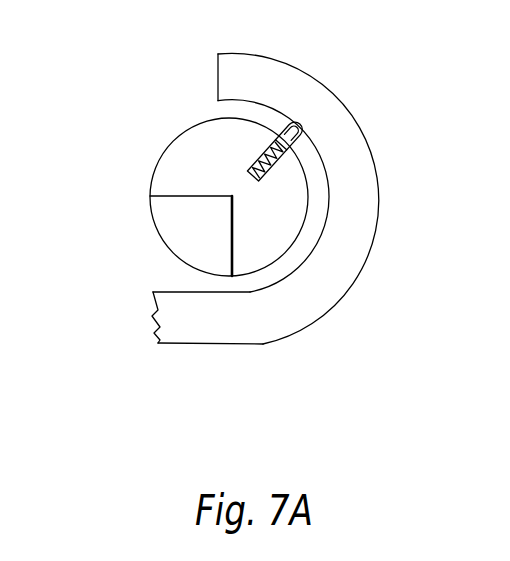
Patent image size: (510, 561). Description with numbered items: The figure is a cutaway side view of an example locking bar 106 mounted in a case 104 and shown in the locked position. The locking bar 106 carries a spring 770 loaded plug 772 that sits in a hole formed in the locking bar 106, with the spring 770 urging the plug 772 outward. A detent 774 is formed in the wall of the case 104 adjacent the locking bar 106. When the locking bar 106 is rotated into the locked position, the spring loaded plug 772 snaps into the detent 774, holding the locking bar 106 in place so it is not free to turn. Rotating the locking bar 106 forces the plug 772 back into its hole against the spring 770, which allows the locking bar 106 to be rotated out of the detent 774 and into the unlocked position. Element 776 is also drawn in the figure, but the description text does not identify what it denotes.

The case 104 is at (265, 344).
The locking bar 106 is at (163, 148).
The spring 770 is at (294, 128).
The plug 772 is at (276, 150).
The detent 774 is at (292, 132).
The spring 776 is at (257, 157).